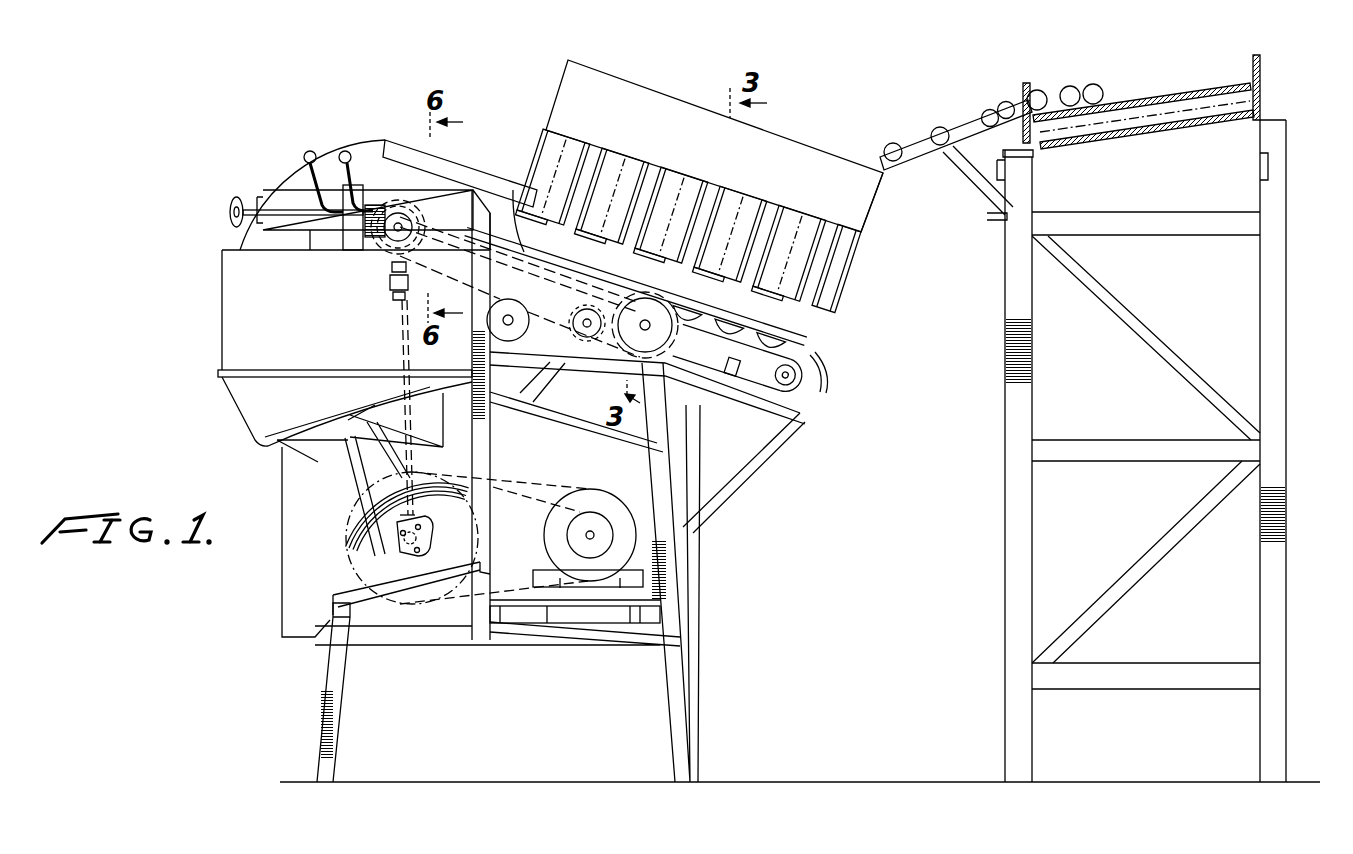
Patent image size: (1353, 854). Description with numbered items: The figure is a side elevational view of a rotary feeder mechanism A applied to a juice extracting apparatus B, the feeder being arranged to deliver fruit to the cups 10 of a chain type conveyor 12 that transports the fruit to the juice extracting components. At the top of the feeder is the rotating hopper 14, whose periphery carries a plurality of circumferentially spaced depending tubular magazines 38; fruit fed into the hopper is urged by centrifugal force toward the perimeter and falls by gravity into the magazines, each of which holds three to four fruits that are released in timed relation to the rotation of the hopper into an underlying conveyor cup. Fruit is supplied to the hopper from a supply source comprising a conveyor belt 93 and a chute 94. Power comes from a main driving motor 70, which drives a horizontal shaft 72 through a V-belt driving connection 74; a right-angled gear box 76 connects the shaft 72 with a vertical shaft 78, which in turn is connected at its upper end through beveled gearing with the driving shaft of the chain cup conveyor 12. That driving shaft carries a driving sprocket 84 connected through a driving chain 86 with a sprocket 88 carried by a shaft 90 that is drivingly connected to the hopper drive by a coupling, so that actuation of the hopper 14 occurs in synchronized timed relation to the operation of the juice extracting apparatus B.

The cups 10 is at (800, 330).
The chain type conveyor 12 is at (810, 356).
The hopper 14 is at (864, 233).
The tubular magazines 38 is at (615, 158).
The main driving motor 70 is at (598, 498).
The horizontal shaft 72 is at (335, 588).
The V-belt driving connection 74 is at (513, 492).
The right-angled gear box 76 is at (340, 560).
The vertical shaft 78 is at (400, 353).
The driving sprocket 84 is at (386, 258).
The driving chain 86 is at (518, 192).
The sprocket 88 is at (615, 345).
The shaft 90 is at (666, 327).
The conveyor belt 93 is at (1133, 136).
The chute 94 is at (923, 160).
The rotary feeder mechanism A is at (634, 77).
The juice extracting apparatus B is at (353, 138).